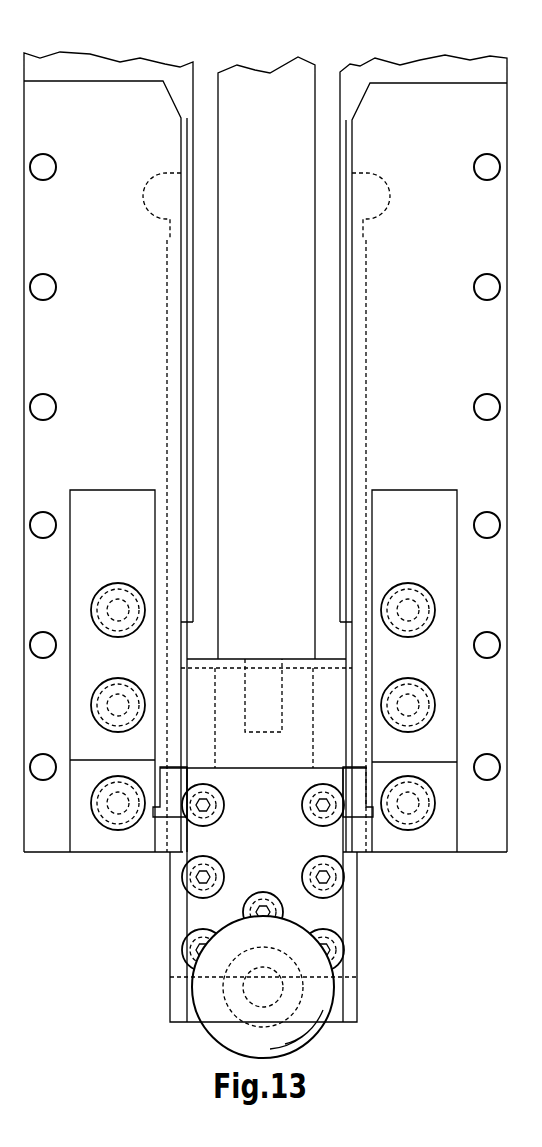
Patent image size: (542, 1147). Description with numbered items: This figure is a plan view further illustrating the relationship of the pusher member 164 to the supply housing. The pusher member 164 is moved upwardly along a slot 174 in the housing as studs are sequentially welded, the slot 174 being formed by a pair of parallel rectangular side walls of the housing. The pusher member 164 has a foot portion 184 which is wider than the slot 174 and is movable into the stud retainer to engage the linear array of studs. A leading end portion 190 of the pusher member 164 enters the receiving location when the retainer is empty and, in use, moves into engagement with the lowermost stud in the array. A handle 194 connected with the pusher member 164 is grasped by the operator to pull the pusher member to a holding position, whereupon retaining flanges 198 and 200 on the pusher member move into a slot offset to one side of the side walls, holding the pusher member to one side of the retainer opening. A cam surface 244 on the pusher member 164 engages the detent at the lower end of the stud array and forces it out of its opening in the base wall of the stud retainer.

The pusher member 164 is at (156, 975).
The slot 174 is at (196, 90).
The foot portion 184 is at (333, 912).
The leading end portion 190 is at (238, 659).
The handle 194 is at (283, 1045).
The retaining flange 198 is at (175, 783).
The retaining flange 200 is at (352, 787).
The cam surface 244 is at (279, 705).